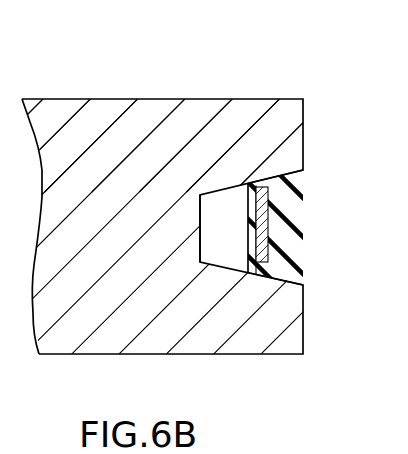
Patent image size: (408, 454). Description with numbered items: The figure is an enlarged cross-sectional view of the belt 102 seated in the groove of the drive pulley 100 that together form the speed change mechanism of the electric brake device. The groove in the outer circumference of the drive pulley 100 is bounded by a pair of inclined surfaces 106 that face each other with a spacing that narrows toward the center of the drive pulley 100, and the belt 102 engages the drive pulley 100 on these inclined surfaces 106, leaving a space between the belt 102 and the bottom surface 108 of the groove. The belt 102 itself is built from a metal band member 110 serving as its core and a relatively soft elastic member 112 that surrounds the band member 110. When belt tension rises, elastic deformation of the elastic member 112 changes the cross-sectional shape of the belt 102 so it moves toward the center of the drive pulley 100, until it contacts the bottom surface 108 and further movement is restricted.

The drive pulley 100 is at (165, 113).
The belt 102 is at (300, 269).
The inclined surfaces 106 is at (288, 172).
The bottom surface 108 is at (212, 251).
The band member 110 is at (292, 261).
The elastic member 112 is at (290, 245).